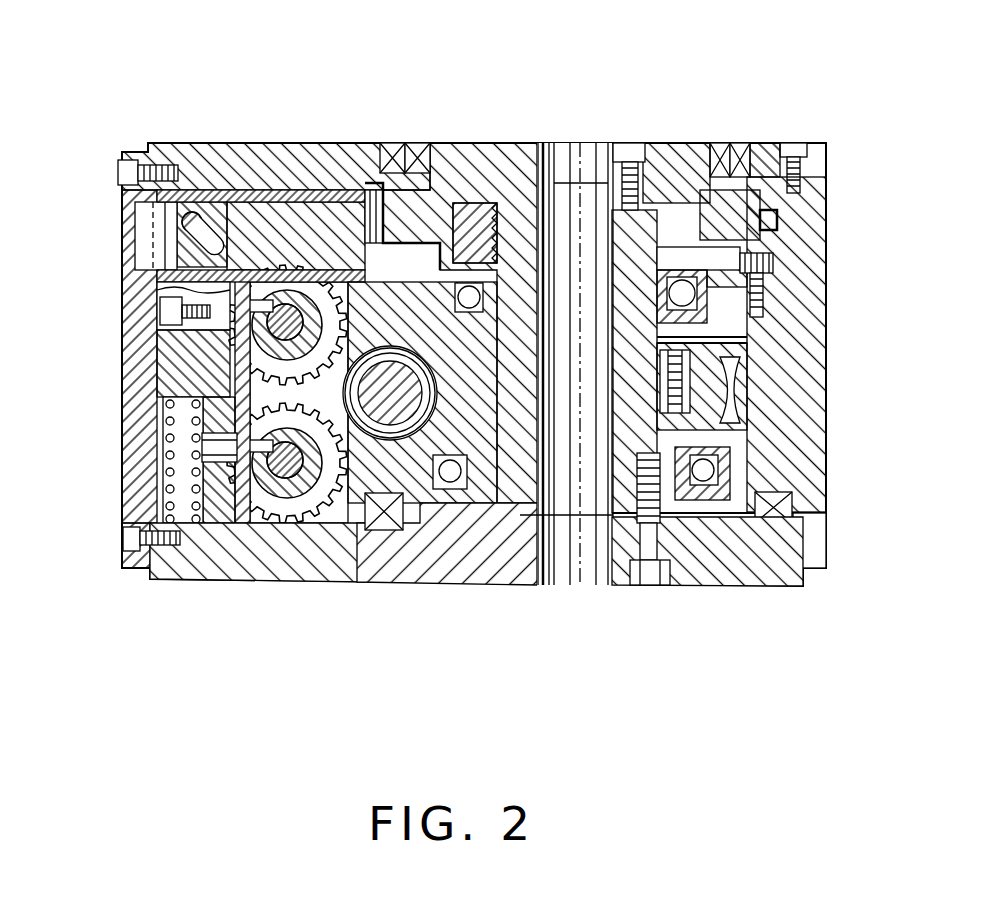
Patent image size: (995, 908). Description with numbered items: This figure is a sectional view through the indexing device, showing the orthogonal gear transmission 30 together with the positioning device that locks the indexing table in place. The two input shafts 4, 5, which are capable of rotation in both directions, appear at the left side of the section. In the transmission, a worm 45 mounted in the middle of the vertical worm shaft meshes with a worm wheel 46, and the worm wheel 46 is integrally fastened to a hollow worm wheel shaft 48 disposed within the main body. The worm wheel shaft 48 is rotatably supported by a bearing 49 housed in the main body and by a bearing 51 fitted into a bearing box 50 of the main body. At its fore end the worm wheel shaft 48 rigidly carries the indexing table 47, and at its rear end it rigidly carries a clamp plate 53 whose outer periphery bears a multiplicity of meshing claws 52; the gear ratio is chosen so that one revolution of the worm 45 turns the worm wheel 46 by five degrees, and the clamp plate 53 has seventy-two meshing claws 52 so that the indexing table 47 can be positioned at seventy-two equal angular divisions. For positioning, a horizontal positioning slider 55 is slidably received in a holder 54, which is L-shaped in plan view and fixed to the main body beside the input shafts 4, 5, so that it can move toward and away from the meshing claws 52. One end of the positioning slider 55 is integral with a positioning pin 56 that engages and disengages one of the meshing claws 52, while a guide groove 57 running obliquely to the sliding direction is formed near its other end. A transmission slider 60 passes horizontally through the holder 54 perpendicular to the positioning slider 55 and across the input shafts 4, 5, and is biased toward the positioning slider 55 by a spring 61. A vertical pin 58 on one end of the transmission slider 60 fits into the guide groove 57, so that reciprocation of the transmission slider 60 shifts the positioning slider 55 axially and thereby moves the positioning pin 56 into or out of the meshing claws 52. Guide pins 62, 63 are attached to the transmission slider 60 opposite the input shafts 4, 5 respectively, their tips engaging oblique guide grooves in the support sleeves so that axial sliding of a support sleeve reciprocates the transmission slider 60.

The input shaft 4 is at (257, 262).
The input shaft 5 is at (290, 470).
The orthogonal gear transmission 30 is at (588, 141).
The worm 45 is at (392, 410).
The worm wheel 46 is at (447, 472).
The indexing table 47 is at (710, 562).
The worm wheel shaft 48 is at (508, 480).
The bearing 49 is at (748, 520).
The bearing box 50 is at (705, 318).
The bearing 51 is at (775, 268).
The meshing claws 52 is at (380, 143).
The clamp plate 53 is at (495, 165).
The holder 54 is at (133, 300).
The positioning slider 55 is at (285, 143).
The positioning pin 56 is at (353, 143).
The guide groove 57 is at (233, 143).
The vertical pin 58 is at (182, 143).
The transmission slider 60 is at (180, 372).
The spring 61 is at (180, 500).
The guide pin 62 is at (225, 328).
The guide pin 63 is at (235, 447).